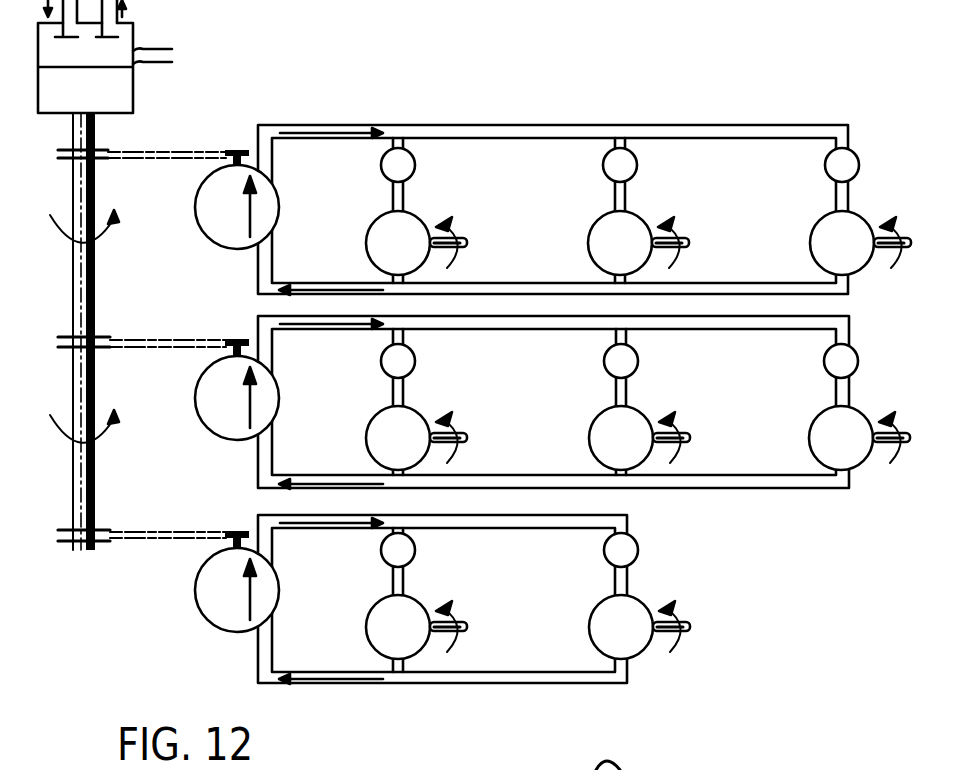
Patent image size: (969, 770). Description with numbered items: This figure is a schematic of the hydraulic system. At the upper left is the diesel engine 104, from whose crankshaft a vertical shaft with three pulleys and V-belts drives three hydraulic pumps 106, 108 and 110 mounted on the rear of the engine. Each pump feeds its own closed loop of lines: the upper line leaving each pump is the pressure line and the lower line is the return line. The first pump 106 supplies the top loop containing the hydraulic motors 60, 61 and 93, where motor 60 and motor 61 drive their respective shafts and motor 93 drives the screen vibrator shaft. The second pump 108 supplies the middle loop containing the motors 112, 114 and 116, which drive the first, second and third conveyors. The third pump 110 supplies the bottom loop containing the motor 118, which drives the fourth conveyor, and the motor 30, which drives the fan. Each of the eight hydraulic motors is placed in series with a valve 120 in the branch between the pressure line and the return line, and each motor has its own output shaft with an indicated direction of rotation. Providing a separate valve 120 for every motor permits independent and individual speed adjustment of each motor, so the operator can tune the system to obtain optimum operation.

The diesel engine 104 is at (128, 103).
The hydraulic pump 106 is at (236, 249).
The hydraulic pump 108 is at (238, 440).
The hydraulic pump 110 is at (239, 632).
The motor 60 is at (374, 257).
The motor 61 is at (596, 257).
The motor 93 is at (817, 257).
The motor 112 is at (374, 451).
The motor 114 is at (598, 451).
The motor 116 is at (817, 449).
The motor 118 is at (374, 641).
The motor 30 is at (596, 641).
The valve 120 is at (389, 179).